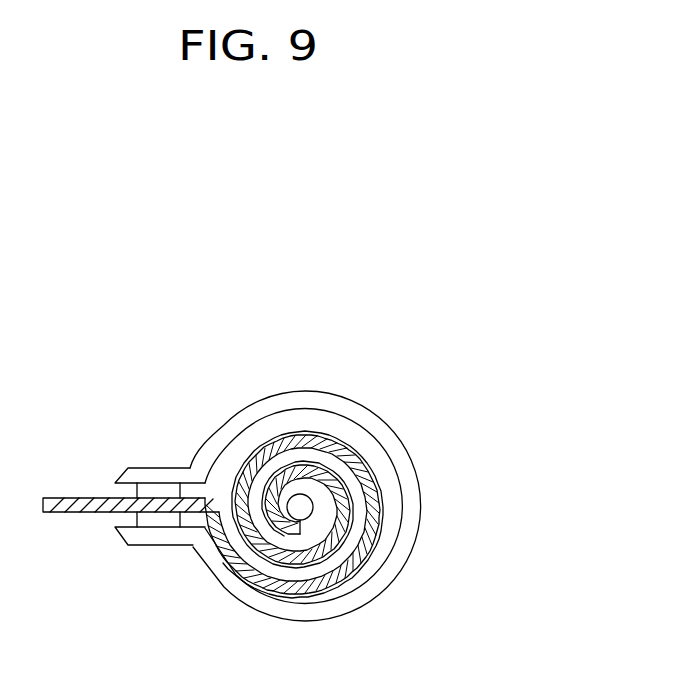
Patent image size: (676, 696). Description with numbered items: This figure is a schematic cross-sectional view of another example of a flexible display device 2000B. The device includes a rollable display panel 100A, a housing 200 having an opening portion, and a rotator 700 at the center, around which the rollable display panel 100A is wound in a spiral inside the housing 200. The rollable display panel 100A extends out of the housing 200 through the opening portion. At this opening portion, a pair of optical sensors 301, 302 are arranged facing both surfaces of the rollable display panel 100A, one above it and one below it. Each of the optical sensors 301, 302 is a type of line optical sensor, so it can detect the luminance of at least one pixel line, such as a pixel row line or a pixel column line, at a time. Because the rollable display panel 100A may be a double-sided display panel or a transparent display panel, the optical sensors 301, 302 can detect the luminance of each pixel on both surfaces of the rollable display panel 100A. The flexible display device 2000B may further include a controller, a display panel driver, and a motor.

The flexible display device 2000B is at (455, 335).
The housing 200 is at (300, 390).
The optical sensor 301 is at (157, 490).
The optical sensor 302 is at (158, 522).
The rollable display panel 100A is at (77, 513).
The rotator 700 is at (305, 505).